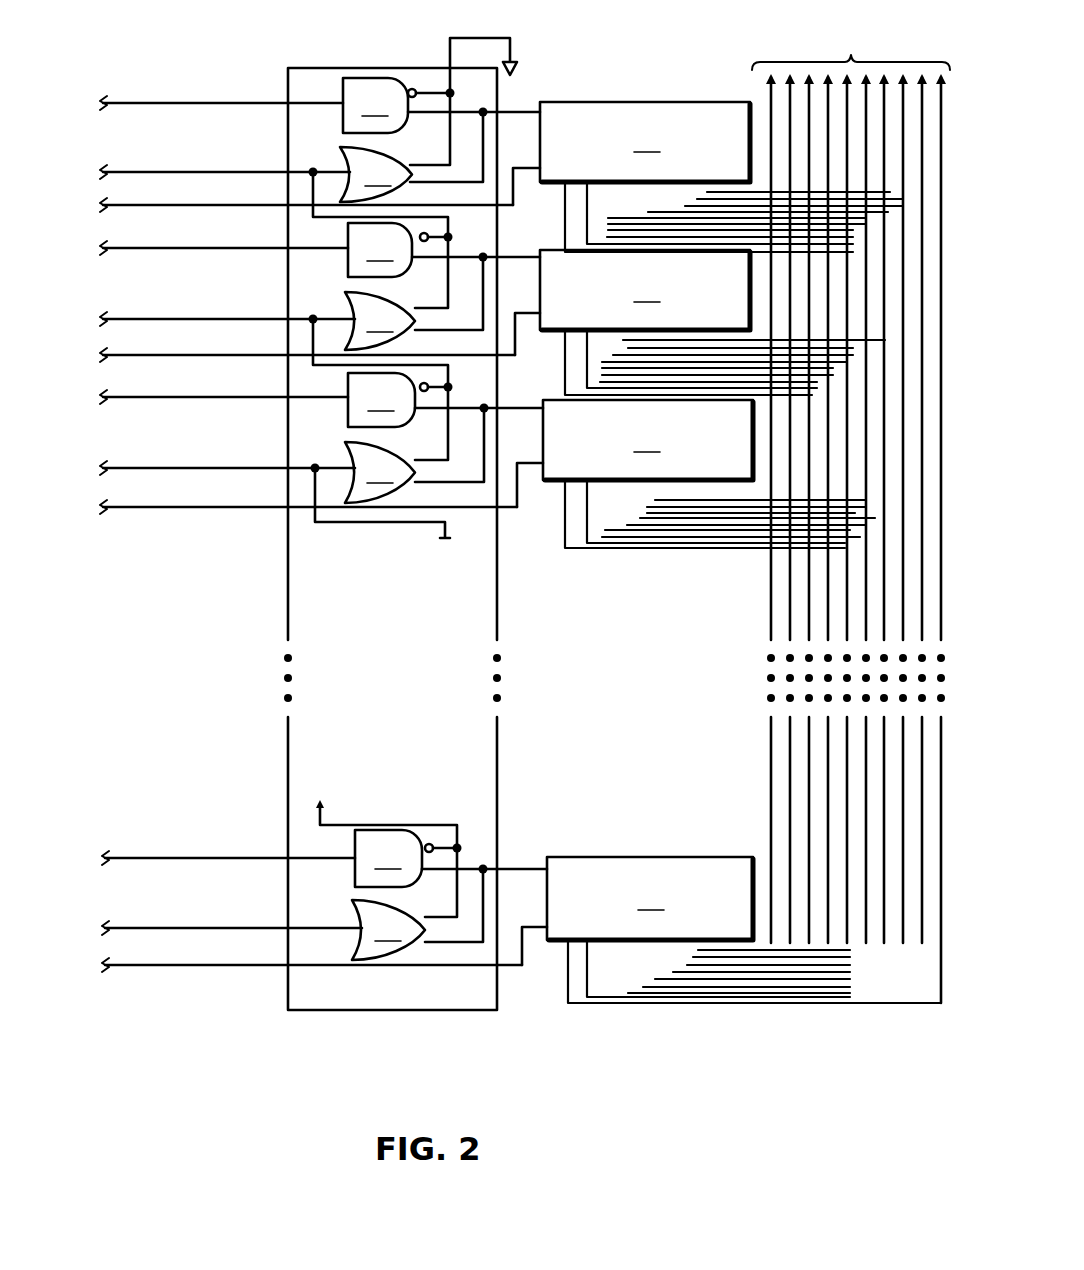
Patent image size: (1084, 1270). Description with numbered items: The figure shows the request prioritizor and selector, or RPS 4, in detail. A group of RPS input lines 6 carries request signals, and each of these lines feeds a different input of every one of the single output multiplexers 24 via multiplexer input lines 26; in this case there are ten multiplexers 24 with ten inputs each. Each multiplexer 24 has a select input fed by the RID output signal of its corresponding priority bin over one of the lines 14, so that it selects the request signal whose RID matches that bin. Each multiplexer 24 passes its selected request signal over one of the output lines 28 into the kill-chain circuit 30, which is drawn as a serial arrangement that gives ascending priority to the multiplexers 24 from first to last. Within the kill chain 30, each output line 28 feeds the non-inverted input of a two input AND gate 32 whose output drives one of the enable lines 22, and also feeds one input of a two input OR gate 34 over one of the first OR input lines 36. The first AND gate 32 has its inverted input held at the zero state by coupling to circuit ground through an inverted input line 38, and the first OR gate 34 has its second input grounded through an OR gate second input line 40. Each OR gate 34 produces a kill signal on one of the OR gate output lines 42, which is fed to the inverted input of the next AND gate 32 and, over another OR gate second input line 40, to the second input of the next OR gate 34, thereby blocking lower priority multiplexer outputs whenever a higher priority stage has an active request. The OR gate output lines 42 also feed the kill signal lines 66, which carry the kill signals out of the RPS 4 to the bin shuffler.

The request prioritizor and selector 4 is at (686, 77).
The RPS input lines 6 is at (851, 52).
The lines 14 is at (183, 966).
The enable lines 22 is at (153, 857).
The single output multiplexers 24 is at (646, 521).
The multiplexer input lines 26 is at (562, 962).
The output lines 28 is at (512, 866).
The kill-chain circuit 30 is at (328, 140).
The AND gate 32 is at (382, 482).
The OR gate 34 is at (382, 553).
The first OR input lines 36 is at (490, 925).
The inverted input line 38 is at (478, 36).
The OR gate second input lines 40 is at (445, 915).
The OR gate output lines 42 is at (362, 824).
The kill signal lines 66 is at (192, 928).